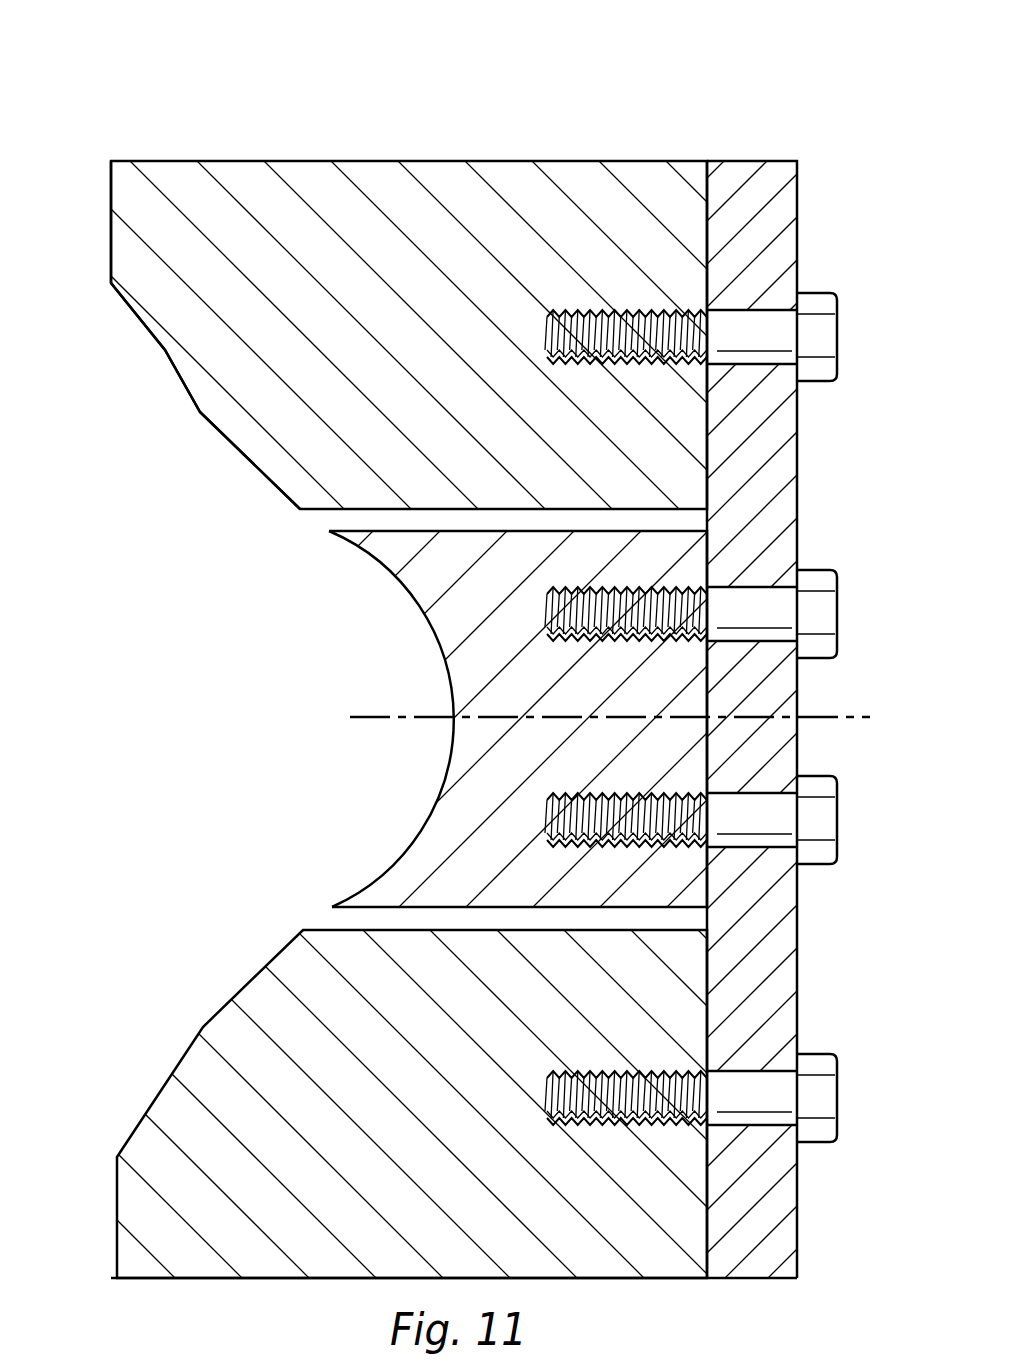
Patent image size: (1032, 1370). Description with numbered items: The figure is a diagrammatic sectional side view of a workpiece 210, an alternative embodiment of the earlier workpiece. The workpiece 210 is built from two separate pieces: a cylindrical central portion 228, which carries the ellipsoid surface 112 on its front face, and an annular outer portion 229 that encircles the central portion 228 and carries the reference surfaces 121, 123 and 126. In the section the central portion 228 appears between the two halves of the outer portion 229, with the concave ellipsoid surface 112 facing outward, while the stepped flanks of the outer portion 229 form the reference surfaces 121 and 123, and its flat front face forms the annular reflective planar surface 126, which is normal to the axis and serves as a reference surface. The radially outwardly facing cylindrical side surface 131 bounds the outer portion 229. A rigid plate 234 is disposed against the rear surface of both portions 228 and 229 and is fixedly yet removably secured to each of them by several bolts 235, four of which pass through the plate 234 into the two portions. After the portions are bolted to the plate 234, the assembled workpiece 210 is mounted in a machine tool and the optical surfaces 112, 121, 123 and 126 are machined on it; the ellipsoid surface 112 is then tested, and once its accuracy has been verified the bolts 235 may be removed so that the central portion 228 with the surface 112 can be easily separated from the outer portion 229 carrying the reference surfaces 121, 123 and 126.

The workpiece 210 is at (597, 71).
The annular outer portion 229 is at (253, 182).
The cylindrical side surface 131 is at (437, 161).
The annular reflective planar surface 126 is at (111, 243).
The reference surface 123 is at (168, 353).
The reference surface 121 is at (267, 468).
The ellipsoid surface 112 is at (421, 627).
The cylindrical central portion 228 is at (467, 762).
The rigid plate 234 is at (793, 1211).
The bolts 235 is at (838, 334).